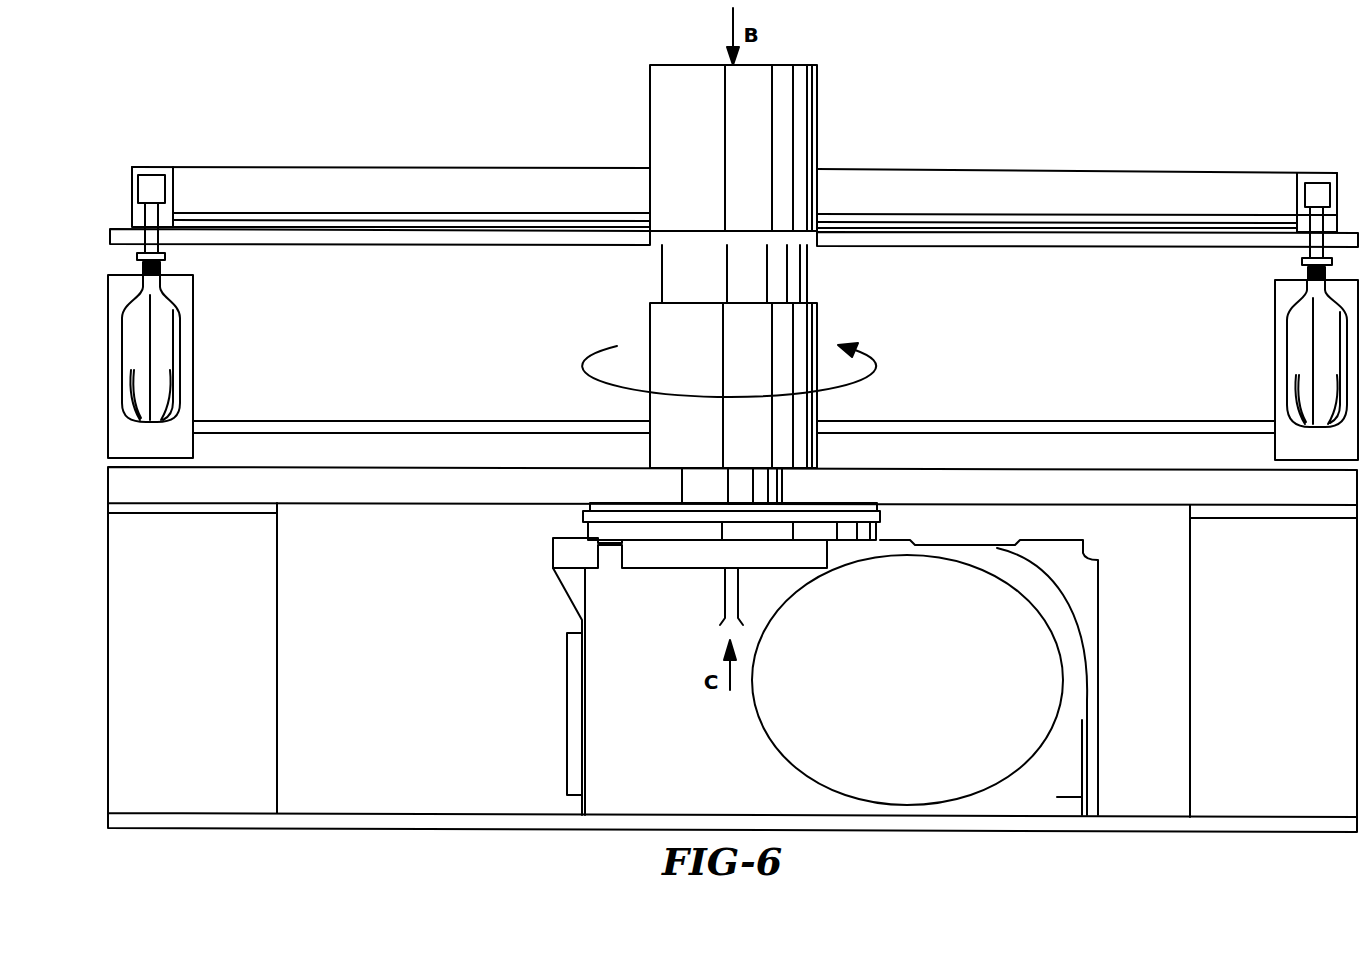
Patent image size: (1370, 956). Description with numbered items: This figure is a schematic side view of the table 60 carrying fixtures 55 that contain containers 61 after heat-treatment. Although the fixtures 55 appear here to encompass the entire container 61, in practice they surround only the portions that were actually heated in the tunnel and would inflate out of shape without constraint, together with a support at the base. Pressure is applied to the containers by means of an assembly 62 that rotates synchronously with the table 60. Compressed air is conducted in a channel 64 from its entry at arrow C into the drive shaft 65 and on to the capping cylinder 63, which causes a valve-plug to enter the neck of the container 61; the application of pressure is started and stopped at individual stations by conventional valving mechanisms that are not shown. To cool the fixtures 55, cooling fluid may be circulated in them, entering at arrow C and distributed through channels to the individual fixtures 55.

The fixtures 55 is at (1308, 443).
The table 60 is at (365, 450).
The container 61 is at (872, 600).
The assembly 62 is at (1092, 192).
The capping cylinder 63 is at (1307, 190).
The channel 64 is at (1165, 232).
The drive shaft 65 is at (677, 282).